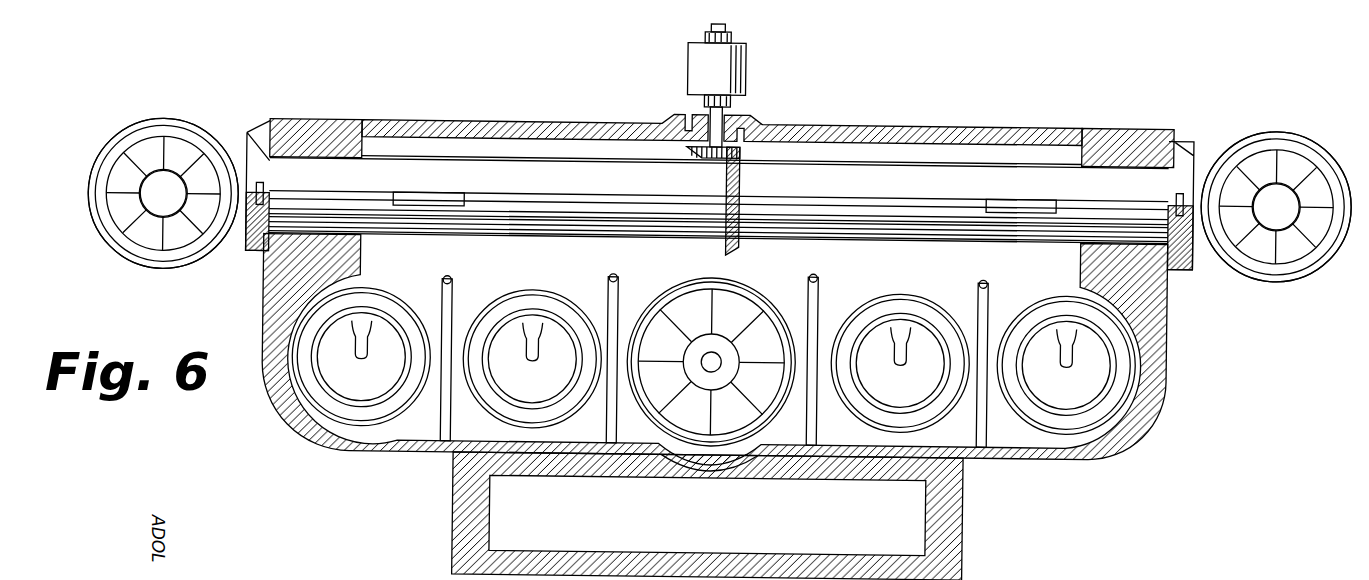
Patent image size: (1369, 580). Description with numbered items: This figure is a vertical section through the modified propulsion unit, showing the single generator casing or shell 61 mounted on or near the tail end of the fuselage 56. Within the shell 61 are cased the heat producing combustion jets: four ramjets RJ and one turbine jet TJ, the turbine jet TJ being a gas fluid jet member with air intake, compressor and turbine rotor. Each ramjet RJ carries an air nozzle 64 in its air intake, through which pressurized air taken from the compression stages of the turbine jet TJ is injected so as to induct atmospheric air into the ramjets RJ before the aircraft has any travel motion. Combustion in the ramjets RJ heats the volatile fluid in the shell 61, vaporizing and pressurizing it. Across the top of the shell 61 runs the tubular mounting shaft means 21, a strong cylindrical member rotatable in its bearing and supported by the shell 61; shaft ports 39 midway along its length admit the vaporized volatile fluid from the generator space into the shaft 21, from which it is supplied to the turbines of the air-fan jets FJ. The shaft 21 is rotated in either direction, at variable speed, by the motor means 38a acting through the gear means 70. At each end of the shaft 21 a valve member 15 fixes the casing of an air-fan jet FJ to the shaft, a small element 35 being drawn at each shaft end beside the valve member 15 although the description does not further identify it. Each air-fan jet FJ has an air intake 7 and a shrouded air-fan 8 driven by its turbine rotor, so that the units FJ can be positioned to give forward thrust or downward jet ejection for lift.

The air intake 7 is at (138, 132).
The air-fan 8 is at (135, 230).
The air-fan jet FJ is at (180, 263).
The valve member 15 is at (262, 146).
The tubular mounting shaft means 21 is at (521, 232).
The key 35 is at (265, 197).
The motor means 38a is at (735, 73).
The shaft port 39 is at (450, 202).
The tail end of the fuselage 56 is at (686, 554).
The generator casing or shell 61 is at (903, 124).
The air nozzle 64 is at (357, 364).
The gear means 70 is at (753, 153).
The ramjet RJ is at (392, 299).
The turbine jet TJ is at (663, 293).